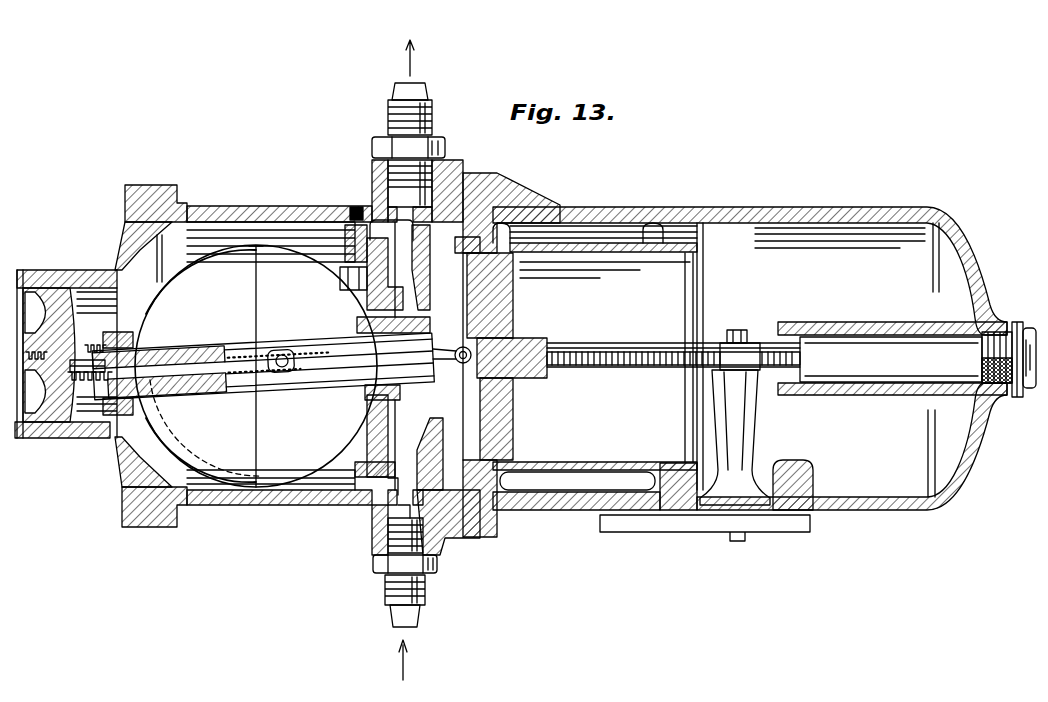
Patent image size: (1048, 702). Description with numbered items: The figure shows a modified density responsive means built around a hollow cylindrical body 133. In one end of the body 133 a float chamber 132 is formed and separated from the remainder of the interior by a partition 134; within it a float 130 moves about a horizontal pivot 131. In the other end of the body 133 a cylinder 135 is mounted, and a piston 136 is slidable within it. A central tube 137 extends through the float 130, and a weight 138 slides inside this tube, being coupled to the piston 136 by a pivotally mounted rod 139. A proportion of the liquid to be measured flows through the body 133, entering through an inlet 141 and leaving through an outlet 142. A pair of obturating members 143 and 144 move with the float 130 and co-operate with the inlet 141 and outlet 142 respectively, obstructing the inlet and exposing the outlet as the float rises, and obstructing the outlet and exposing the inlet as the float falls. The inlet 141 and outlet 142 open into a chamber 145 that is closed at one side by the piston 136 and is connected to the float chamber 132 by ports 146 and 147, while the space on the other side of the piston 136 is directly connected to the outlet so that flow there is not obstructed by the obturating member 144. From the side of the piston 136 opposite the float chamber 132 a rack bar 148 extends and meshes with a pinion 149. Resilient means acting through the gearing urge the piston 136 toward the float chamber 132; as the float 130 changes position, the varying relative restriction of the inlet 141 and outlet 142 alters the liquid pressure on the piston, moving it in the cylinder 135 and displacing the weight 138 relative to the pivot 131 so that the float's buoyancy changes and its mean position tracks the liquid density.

The float 130 is at (238, 472).
The horizontal pivot 131 is at (456, 348).
The float chamber 132 is at (277, 237).
The hollow cylindrical body 133 is at (538, 503).
The partition 134 is at (360, 467).
The cylinder 135 is at (633, 243).
The piston 136 is at (527, 297).
The central tube 137 is at (320, 383).
The weight 138 is at (165, 383).
The pivotally mounted rod 139 is at (318, 333).
The inlet 141 is at (443, 543).
The outlet 142 is at (368, 205).
The obturating member 143 is at (433, 492).
The obturating member 144 is at (426, 246).
The chamber 145 is at (385, 505).
The port 146 is at (392, 482).
The port 147 is at (357, 224).
The rack bar 148 is at (635, 362).
The pinion 149 is at (740, 345).